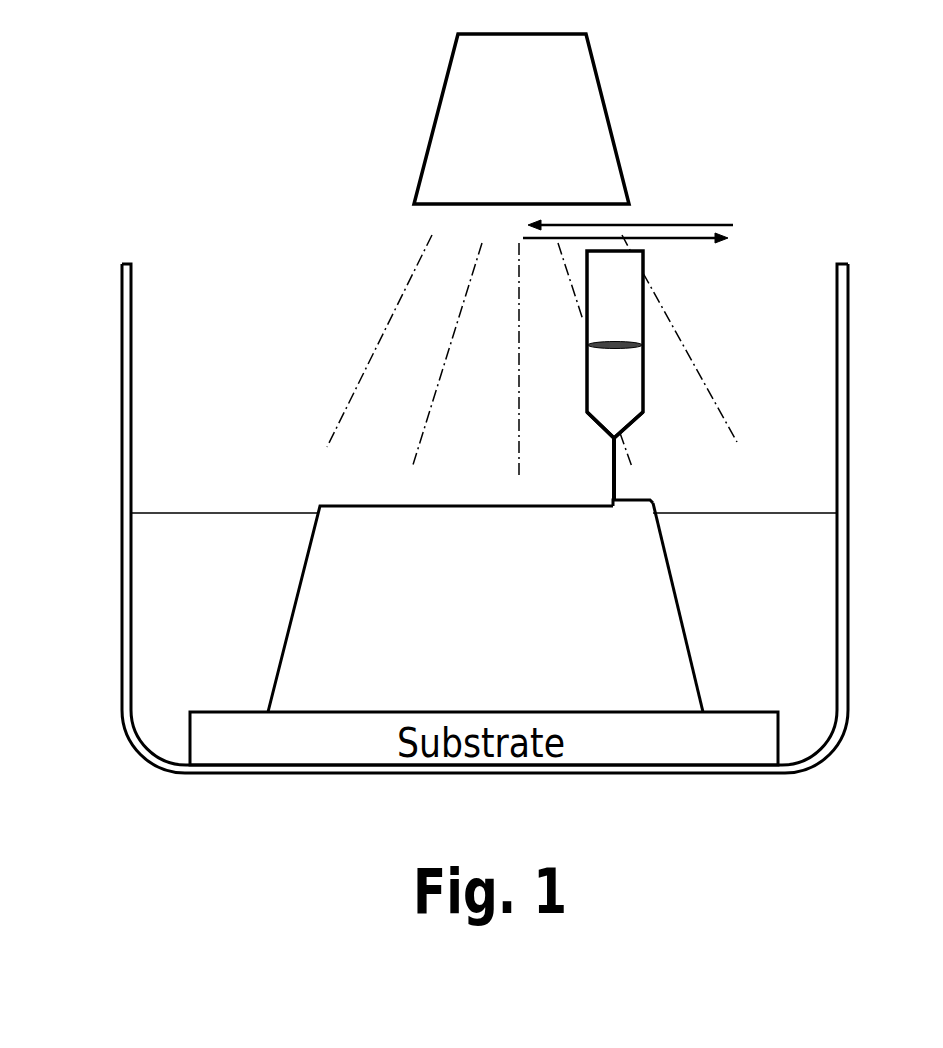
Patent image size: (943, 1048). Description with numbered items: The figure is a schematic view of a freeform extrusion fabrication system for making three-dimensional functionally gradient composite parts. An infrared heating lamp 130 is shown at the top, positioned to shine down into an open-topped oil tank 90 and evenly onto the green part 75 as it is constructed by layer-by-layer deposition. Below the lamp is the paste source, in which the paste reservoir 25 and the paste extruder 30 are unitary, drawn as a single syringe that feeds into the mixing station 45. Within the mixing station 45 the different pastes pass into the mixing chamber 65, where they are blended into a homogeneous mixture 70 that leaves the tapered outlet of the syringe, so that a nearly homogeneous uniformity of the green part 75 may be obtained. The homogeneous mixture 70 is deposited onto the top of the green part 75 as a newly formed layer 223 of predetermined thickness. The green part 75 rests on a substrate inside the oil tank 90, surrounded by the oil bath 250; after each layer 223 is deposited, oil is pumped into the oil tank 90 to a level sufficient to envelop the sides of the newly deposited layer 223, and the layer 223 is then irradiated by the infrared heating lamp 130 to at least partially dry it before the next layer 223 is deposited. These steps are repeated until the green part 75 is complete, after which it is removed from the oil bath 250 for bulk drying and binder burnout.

The infrared heating lamp 130 is at (540, 133).
The paste reservoir 25 is at (662, 344).
The paste extruder 30 is at (643, 288).
The mixing station 45 is at (587, 372).
The mixing chamber 65 is at (615, 414).
The homogeneous mixture 70 is at (613, 478).
The layer 223 is at (652, 503).
The green part 75 is at (668, 620).
The oil tank 90 is at (122, 481).
The oil bath 250 is at (160, 665).